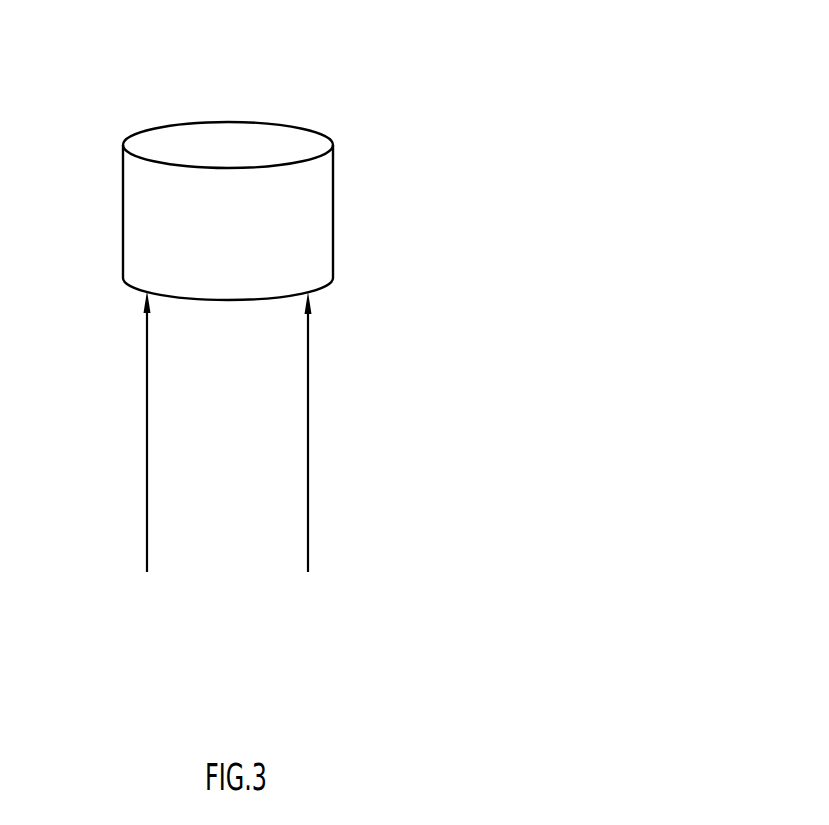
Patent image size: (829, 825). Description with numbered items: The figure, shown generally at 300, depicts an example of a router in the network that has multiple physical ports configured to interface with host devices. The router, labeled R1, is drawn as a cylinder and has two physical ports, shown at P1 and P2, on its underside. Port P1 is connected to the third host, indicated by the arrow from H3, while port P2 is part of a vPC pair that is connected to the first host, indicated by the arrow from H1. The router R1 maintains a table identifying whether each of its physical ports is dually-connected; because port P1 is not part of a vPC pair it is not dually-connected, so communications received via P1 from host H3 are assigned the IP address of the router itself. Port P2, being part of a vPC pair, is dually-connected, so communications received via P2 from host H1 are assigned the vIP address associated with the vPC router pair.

The router with multiple physical ports 300 is at (458, 28).
The router 1 R1 is at (229, 225).
The physical port P1 is at (107, 325).
The physical port P2 is at (350, 325).
The host 1 H1 is at (306, 465).
The host 3 H3 is at (147, 465).